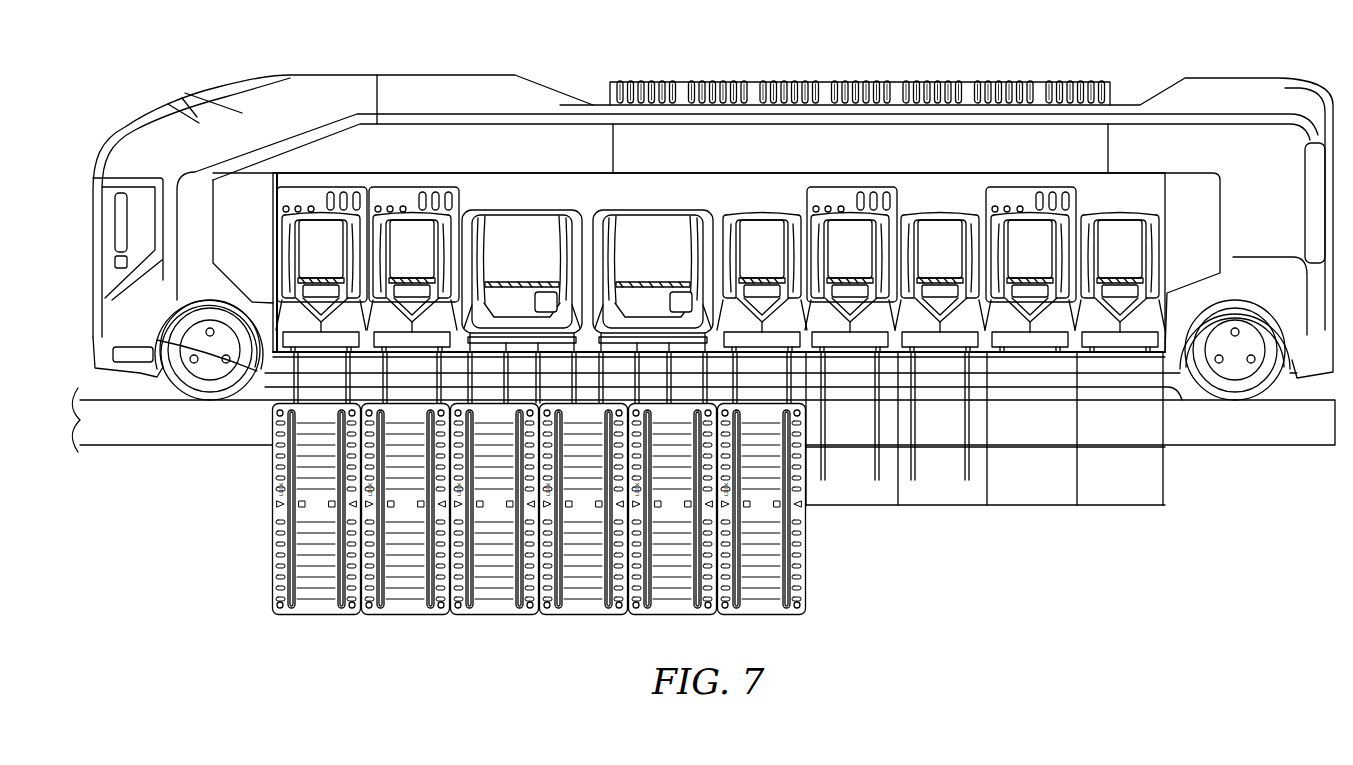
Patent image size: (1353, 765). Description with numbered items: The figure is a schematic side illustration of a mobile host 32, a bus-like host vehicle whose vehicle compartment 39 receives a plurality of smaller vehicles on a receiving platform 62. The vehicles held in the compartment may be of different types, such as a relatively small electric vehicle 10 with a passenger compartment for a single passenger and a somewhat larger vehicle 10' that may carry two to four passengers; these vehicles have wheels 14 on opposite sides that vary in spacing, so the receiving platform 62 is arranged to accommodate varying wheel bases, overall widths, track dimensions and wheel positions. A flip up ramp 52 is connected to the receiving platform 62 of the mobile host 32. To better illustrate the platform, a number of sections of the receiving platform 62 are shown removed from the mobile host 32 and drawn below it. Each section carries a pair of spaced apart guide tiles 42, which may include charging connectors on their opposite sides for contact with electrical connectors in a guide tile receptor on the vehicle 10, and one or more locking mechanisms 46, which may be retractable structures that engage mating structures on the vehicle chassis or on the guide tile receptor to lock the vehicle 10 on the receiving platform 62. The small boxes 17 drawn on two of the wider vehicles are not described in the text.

The mobile host 32 is at (239, 76).
The vehicle compartment 39 is at (1148, 197).
The vehicle 10 is at (321, 247).
The vehicle 10' is at (412, 247).
The wheels 14 is at (390, 300).
The seat label/indicator 17 is at (613, 302).
The flip up ramp 52 is at (318, 197).
The guide tiles 42 is at (340, 608).
The locking mechanism 46 is at (787, 534).
The receiving platform 62 is at (805, 574).